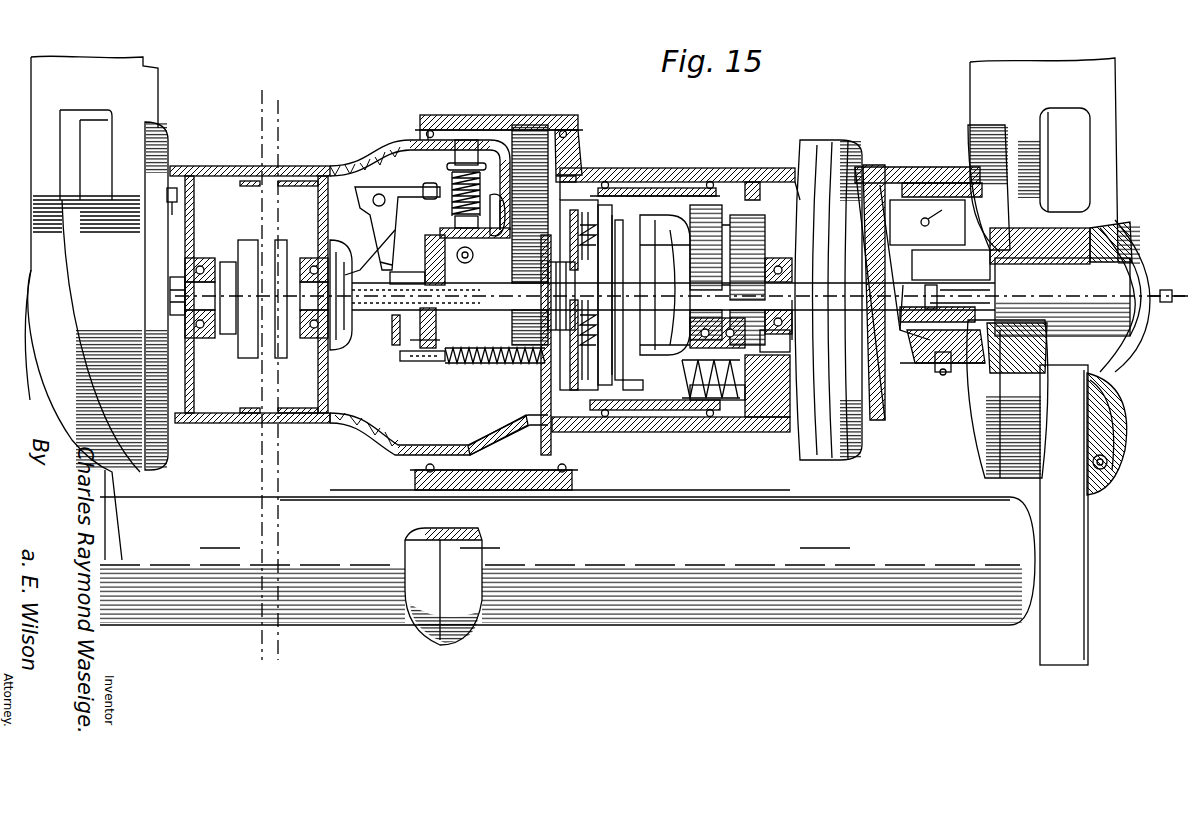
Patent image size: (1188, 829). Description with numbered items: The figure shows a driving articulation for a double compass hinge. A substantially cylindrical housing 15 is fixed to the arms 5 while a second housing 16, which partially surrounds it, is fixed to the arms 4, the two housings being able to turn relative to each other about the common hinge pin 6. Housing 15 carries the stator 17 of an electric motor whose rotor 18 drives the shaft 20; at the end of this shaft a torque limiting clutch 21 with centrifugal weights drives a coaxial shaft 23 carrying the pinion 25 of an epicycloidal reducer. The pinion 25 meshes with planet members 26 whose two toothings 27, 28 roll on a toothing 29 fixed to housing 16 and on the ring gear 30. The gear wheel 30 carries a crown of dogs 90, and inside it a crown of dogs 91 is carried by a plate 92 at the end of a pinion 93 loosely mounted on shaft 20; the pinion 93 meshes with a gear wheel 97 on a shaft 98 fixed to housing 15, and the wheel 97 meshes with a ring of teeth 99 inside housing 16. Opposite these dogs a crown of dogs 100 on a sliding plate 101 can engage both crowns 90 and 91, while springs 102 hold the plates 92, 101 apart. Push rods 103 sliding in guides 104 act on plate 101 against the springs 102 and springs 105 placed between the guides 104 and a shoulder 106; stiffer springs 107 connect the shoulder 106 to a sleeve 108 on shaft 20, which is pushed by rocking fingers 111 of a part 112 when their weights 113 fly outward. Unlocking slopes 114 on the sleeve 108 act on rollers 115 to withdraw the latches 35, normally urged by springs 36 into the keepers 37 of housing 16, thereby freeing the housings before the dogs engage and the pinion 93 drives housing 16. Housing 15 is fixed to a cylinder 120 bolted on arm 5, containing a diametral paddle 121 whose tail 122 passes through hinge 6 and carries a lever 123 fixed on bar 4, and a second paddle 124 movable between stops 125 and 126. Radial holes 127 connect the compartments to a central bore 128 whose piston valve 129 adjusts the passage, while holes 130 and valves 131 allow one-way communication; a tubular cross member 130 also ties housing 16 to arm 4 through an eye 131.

The arm 4 is at (775, 240).
The arm 5 is at (67, 68).
The hinge pin 6 is at (1165, 302).
The housing 15 is at (222, 162).
The housing 16 is at (548, 120).
The stator 17 is at (290, 410).
The rotor 18 is at (247, 347).
The drive shaft 20 is at (376, 310).
The torque limiting clutch 21 is at (676, 382).
The shaft 23 is at (780, 338).
The pinion 25 is at (715, 330).
The planet member 26 is at (765, 170).
The toothing 27 is at (762, 220).
The toothing 28 is at (690, 215).
The toothing 29 is at (738, 420).
The ring gear 30 is at (738, 180).
The latch 35 is at (465, 145).
The spring 36 is at (460, 195).
The keeper 37 is at (490, 138).
The crown of dogs 90 is at (605, 212).
The crown of dogs 91 is at (612, 250).
The plate 92 is at (612, 392).
The pinion 93 is at (520, 318).
The gear wheel 97 is at (560, 168).
The shaft 98 is at (566, 185).
The ring of teeth 99 is at (575, 488).
The crown of dogs 100 is at (645, 182).
The plate 101 is at (645, 172).
The spring 102 is at (660, 370).
The push rod 103 is at (503, 355).
The guide 104 is at (590, 425).
The spring 105 is at (499, 365).
The shoulder 106 is at (452, 335).
The spring 107 is at (441, 363).
The sleeve 108 is at (408, 325).
The rocking finger 111 is at (383, 265).
The part 112 is at (355, 210).
The weight 113 is at (425, 190).
The unlocking slope 114 is at (448, 260).
The roller 115 is at (473, 252).
The cylinder 120 is at (860, 430).
The diametral paddle 121 is at (895, 185).
The tail 122 is at (1130, 250).
The lever 123 is at (1122, 410).
The paddle 124 is at (928, 210).
The stop 125 is at (896, 440).
The stop 126 is at (862, 168).
The radial hole 127 is at (985, 296).
The central bore 128 is at (912, 290).
The piston valve 129 is at (935, 360).
The hole / tubular cross member 130 is at (585, 635).
The valve / eye 131 is at (938, 378).